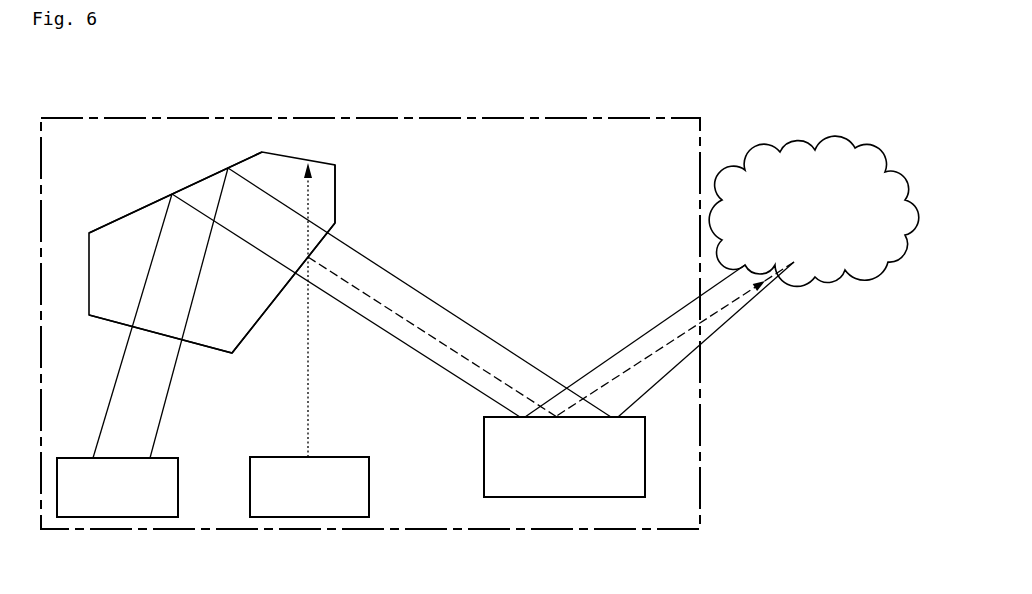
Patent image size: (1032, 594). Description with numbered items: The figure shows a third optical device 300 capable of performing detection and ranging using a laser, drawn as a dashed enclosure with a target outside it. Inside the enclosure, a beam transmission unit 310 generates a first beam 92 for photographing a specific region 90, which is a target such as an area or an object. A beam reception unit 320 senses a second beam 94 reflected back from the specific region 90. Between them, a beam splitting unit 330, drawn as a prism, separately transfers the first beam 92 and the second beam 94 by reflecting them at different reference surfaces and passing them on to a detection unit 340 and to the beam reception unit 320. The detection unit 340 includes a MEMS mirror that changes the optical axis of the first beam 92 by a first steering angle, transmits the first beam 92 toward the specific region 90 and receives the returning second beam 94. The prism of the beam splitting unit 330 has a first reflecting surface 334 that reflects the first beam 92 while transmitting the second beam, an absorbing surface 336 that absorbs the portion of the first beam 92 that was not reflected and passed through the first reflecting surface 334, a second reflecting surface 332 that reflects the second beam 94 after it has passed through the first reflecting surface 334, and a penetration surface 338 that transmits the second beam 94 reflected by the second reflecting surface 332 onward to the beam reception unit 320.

The specific region 90 is at (812, 142).
The first beam 92 is at (308, 398).
The second beam 94 is at (758, 296).
The third optical device 300 is at (700, 445).
The beam transmission unit 310 is at (369, 483).
The beam reception unit 320 is at (178, 483).
The beam splitting unit 330 is at (350, 284).
The second reflecting surface 332 is at (108, 224).
The first reflecting surface 334 is at (258, 327).
The absorbing surface 336 is at (336, 192).
The penetration surface 338 is at (203, 347).
The detection unit 340 is at (484, 433).